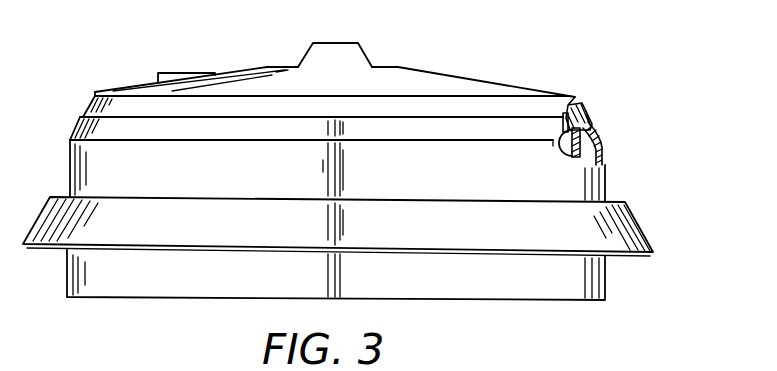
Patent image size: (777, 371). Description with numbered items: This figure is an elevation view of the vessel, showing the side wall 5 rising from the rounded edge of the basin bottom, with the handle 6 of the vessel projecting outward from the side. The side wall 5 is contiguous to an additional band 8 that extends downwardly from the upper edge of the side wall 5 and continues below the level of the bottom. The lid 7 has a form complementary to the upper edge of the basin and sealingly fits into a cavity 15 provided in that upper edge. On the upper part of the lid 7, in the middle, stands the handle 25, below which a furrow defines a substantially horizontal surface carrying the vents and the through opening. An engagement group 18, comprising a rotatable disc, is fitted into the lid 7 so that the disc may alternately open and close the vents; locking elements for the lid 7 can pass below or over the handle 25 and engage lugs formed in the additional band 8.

The side wall 5 is at (592, 130).
The handle 6 is at (650, 219).
The lid 7 is at (342, 86).
The additional band 8 is at (600, 140).
The cavity 15 is at (587, 122).
The engagement group 18 is at (185, 66).
The handle 25 is at (337, 43).